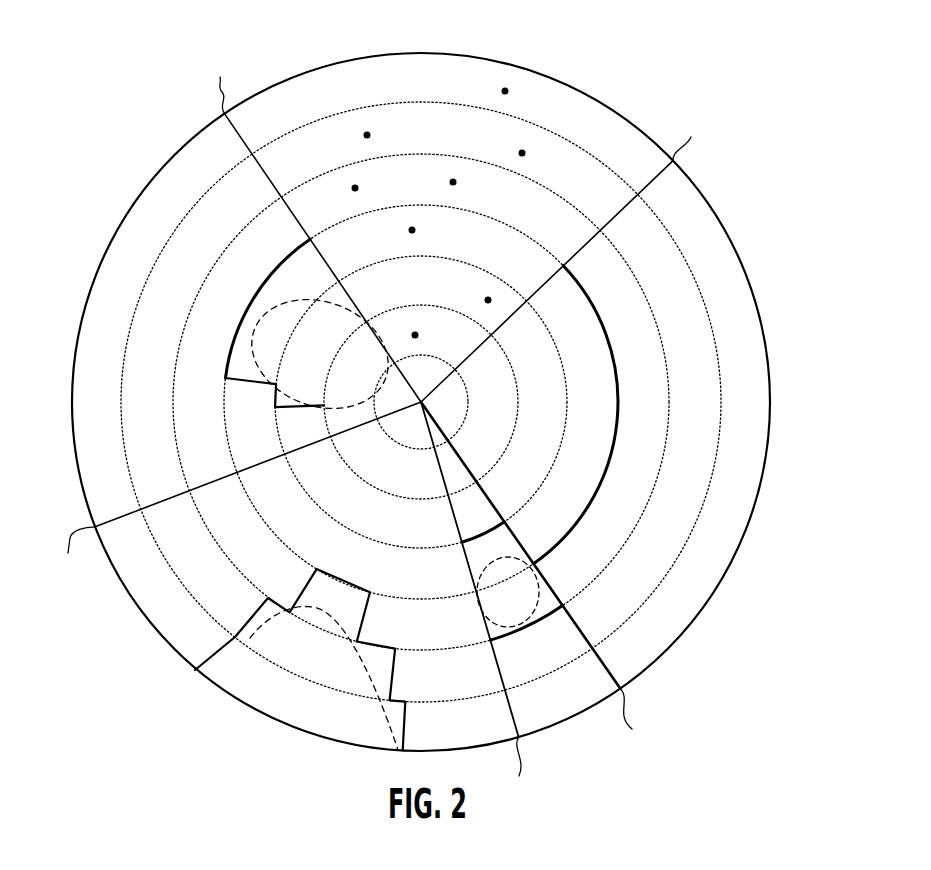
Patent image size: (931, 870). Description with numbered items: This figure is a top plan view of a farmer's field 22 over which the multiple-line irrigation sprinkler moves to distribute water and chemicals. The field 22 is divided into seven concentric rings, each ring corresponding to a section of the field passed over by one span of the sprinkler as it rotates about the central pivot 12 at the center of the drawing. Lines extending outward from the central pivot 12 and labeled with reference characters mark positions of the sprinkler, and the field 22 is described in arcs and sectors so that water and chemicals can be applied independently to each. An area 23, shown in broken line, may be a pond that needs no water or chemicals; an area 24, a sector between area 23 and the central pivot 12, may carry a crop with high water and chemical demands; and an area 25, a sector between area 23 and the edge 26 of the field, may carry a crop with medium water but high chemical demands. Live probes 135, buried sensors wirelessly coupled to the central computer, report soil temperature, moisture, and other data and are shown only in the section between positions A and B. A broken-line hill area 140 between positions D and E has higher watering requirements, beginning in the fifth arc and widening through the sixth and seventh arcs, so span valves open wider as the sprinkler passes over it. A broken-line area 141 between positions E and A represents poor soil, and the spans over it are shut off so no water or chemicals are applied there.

The central pivot 12 is at (440, 401).
The field 22 is at (623, 89).
The area 23 is at (537, 578).
The area 24 is at (492, 492).
The area 25 is at (580, 630).
The edge 26 is at (723, 582).
The live probes 135 is at (505, 91).
The hill area 140 is at (222, 668).
The area 141 is at (258, 367).